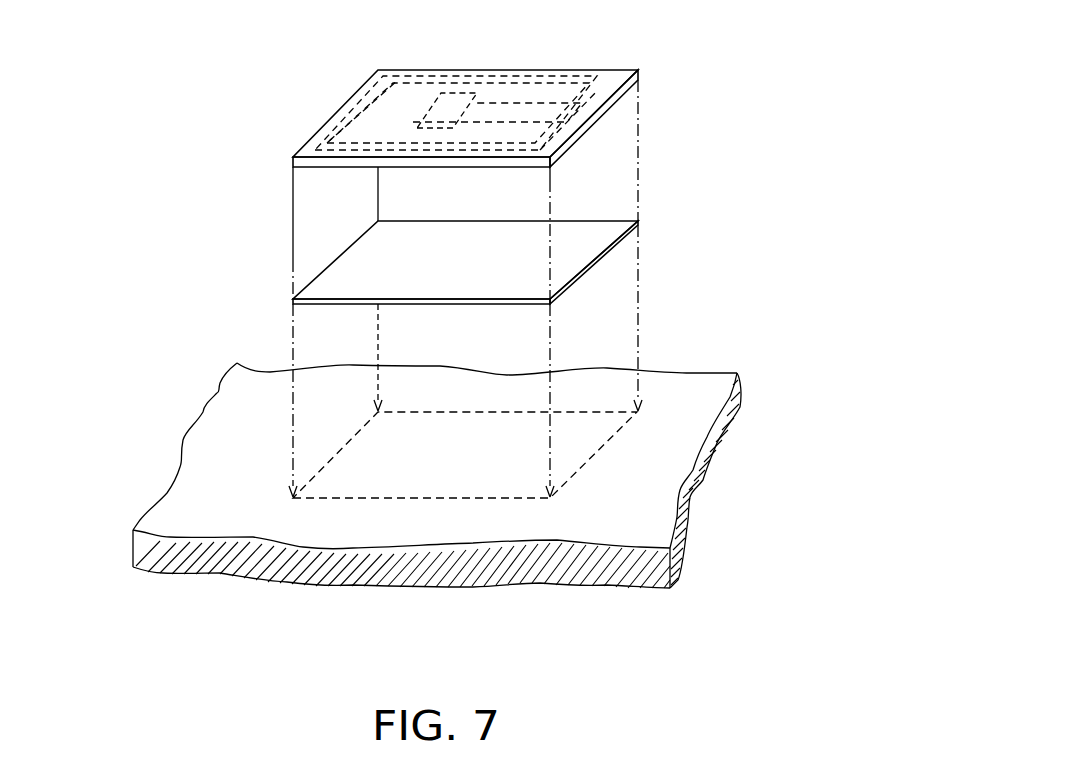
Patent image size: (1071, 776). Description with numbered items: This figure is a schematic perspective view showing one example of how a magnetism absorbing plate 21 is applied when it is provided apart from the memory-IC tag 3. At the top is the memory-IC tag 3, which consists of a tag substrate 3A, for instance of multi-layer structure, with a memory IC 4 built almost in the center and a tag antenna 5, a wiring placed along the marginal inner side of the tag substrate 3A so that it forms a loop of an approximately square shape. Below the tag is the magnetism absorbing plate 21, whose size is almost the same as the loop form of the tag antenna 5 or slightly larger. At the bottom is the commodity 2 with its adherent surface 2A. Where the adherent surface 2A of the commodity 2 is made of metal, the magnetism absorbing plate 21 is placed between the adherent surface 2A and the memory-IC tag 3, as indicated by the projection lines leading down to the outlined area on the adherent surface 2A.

The commodity 2 is at (213, 457).
The adherent surface 2A is at (640, 522).
The memory-IC tag 3 is at (609, 50).
The tag substrate 3A is at (347, 107).
The memory IC 4 is at (452, 93).
The tag antenna 5 is at (607, 118).
The magnetism absorbing plate 21 is at (600, 258).